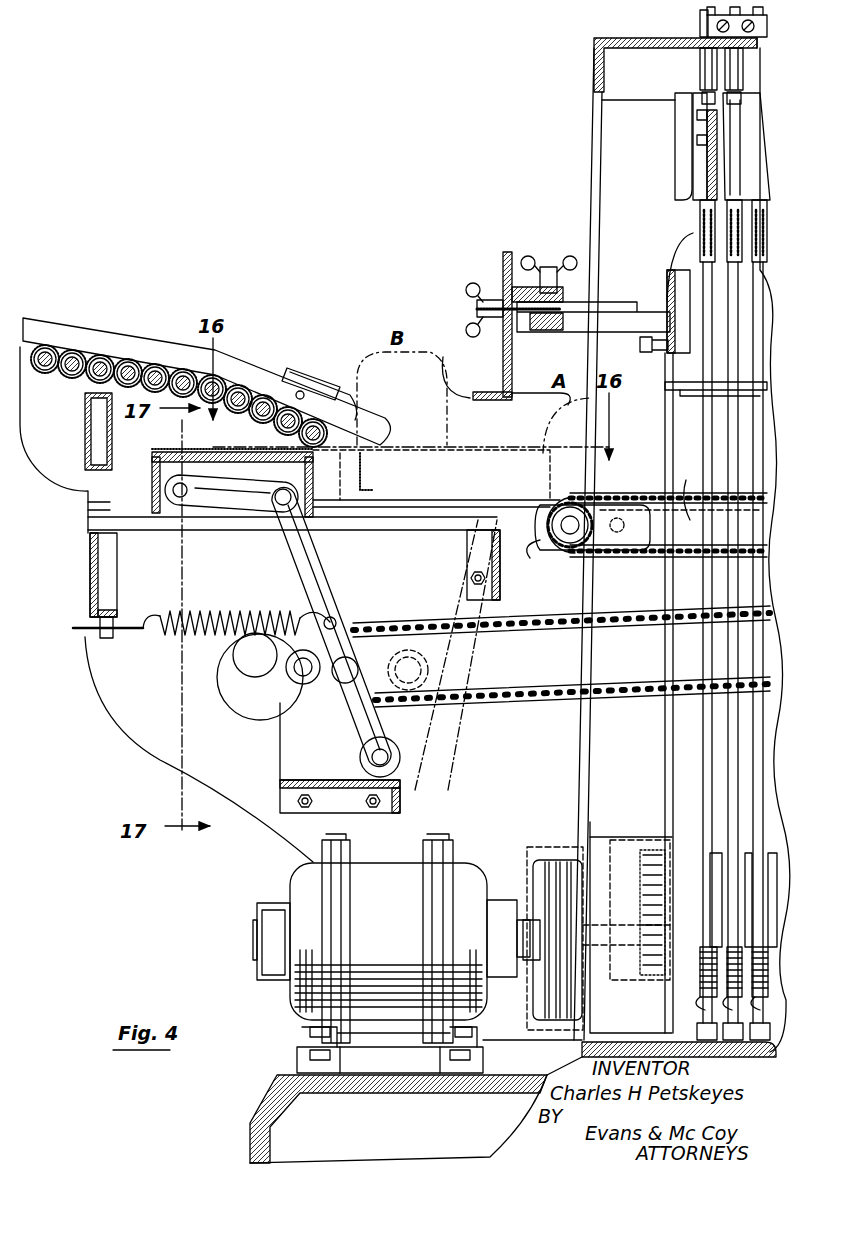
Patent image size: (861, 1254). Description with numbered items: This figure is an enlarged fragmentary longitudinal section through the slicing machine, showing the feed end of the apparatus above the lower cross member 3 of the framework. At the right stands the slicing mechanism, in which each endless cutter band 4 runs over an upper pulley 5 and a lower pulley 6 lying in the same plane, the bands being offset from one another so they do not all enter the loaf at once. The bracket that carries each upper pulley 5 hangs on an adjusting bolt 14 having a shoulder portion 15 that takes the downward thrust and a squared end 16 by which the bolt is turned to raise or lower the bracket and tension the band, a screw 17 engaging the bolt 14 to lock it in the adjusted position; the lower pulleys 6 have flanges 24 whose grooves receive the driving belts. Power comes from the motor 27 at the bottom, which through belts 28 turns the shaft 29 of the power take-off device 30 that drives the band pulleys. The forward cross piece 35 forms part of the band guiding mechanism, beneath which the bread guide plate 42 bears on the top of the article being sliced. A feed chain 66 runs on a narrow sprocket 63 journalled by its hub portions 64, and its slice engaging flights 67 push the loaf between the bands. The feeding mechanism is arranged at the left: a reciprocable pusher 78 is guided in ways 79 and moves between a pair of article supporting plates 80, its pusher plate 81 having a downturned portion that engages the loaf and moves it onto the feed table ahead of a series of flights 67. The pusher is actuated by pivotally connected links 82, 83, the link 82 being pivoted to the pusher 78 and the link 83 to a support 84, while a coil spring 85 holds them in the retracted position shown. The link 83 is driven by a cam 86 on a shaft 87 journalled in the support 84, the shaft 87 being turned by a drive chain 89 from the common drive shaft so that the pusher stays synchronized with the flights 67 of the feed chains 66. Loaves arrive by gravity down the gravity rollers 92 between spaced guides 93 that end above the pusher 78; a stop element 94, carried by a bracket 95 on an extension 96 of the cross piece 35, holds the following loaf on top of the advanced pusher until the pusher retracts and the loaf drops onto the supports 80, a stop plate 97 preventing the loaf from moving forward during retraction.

The lower cross member 3 is at (582, 1050).
The endless cutter band 4 is at (735, 741).
The upper pulley 5 is at (705, 215).
The lower pulley 6 is at (745, 818).
The adjusting bolt 14 is at (703, 102).
The shoulder portion 15 is at (700, 25).
The squared end 16 is at (705, 12).
The screw 17 is at (705, 46).
The flange 24 is at (765, 965).
The motor 27 is at (376, 952).
The belts 28 is at (545, 860).
The shaft 29 is at (631, 924).
The power take-off device 30 is at (614, 842).
The forward cross piece 35 is at (677, 302).
The bread guide plate 42 is at (690, 396).
The sprocket 63 is at (555, 540).
The hub portion 64 is at (544, 566).
The feed chain 66 is at (645, 488).
The slice engaging flight 67 is at (688, 478).
The pusher 78 is at (152, 478).
The ways 79 is at (88, 505).
The article supporting plate 80 is at (330, 505).
The pusher plate 81 is at (262, 452).
The link 82 is at (233, 512).
The link 83 is at (291, 540).
The support 84 is at (400, 776).
The coil spring 85 is at (182, 617).
The cam 86 is at (258, 716).
The shaft 87 is at (300, 676).
The drive chain 89 is at (497, 706).
The gravity roller 92 is at (128, 358).
The guide 93 is at (250, 358).
The stop element 94 is at (503, 262).
The bracket 95 is at (568, 278).
The extension 96 is at (577, 324).
The stop plate 97 is at (362, 416).